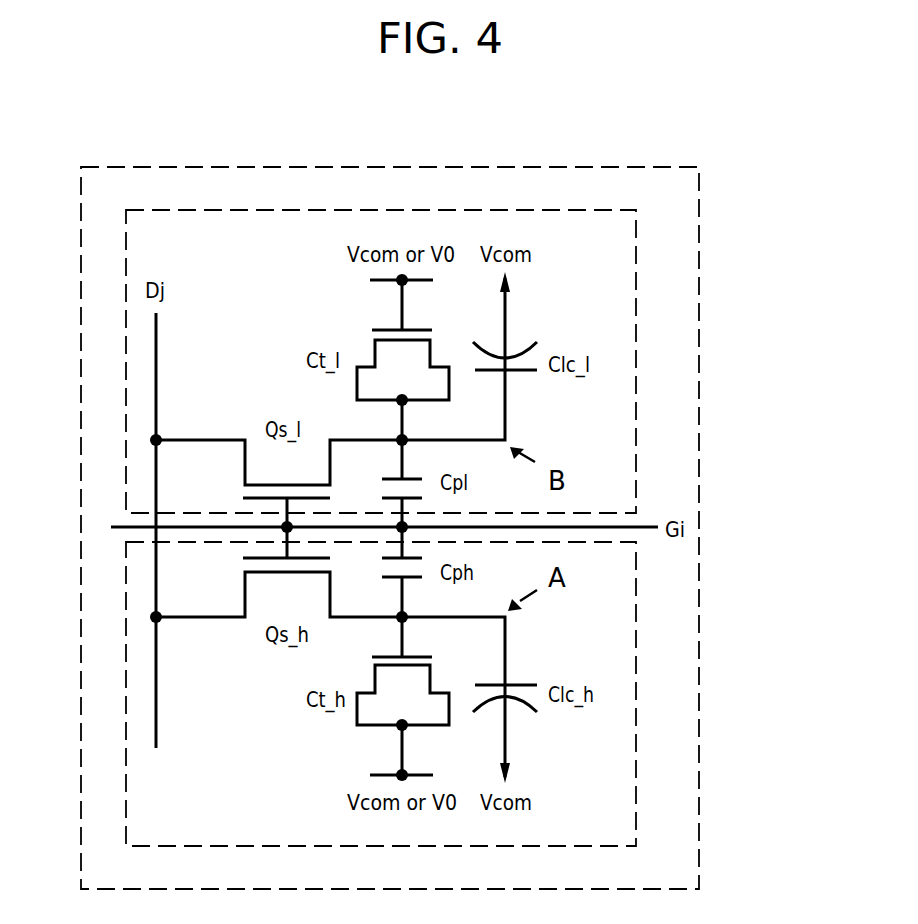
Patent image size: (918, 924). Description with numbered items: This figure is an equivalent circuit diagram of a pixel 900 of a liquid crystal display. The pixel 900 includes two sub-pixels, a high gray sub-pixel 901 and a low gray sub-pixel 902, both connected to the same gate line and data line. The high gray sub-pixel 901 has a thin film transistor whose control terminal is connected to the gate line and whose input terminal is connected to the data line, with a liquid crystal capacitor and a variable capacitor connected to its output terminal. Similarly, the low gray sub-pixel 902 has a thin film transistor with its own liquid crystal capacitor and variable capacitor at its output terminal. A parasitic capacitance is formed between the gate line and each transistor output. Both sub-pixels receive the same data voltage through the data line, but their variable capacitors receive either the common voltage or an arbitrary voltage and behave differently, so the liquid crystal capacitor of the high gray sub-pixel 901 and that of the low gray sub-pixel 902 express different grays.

The pixel 900 is at (699, 215).
The high gray sub-pixel 901 is at (636, 728).
The low gray sub-pixel 902 is at (636, 325).